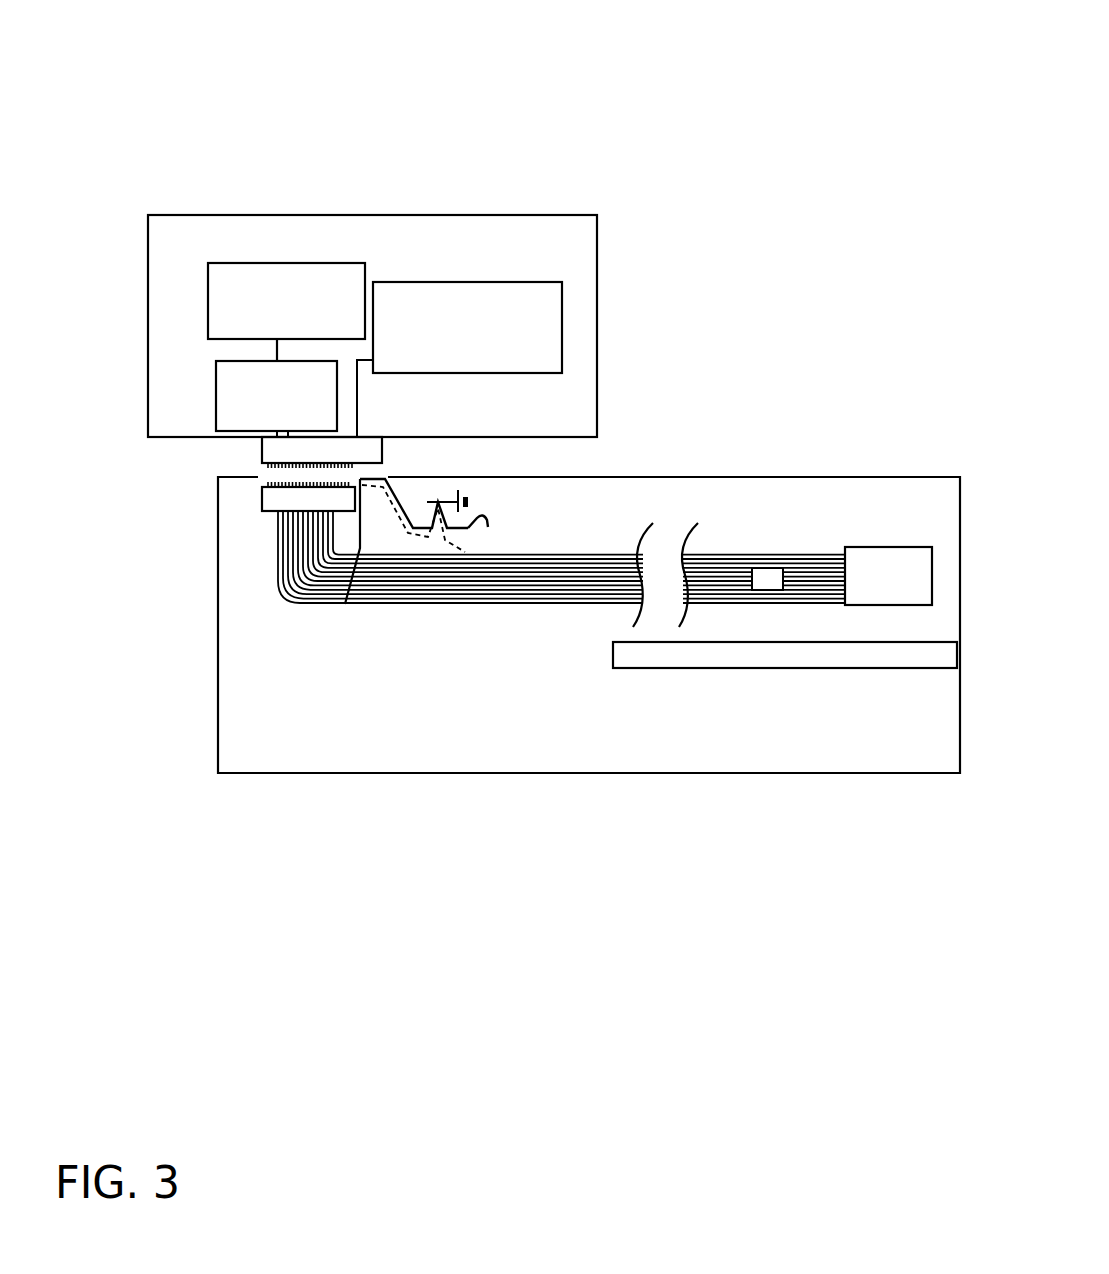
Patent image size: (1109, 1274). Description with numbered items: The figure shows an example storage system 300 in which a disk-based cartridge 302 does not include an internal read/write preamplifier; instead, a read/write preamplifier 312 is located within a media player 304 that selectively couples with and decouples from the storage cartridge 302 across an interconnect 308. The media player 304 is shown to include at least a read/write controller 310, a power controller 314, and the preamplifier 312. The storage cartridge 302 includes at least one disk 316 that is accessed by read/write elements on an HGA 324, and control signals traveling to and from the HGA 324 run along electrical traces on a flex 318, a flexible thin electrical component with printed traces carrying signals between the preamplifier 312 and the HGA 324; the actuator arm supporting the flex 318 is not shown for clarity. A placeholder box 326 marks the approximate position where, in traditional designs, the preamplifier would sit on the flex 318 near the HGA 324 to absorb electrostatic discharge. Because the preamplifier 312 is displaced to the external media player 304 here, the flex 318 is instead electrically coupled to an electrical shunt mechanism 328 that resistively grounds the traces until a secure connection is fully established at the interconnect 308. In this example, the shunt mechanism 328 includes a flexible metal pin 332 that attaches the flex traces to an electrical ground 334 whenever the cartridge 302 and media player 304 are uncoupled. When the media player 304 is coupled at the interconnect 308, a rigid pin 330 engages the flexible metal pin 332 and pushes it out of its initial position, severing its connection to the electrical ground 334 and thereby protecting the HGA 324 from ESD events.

The storage system 300 is at (787, 90).
The disk-based cartridge 302 is at (265, 761).
The media player 304 is at (196, 275).
The interconnect 308 is at (228, 460).
The read/write controller 310 is at (268, 326).
The read/write preamplifier 312 is at (258, 420).
The power controller 314 is at (448, 351).
The disk 316 is at (833, 665).
The flex 318 is at (515, 619).
The HGA 324 is at (869, 600).
The placeholder box 326 is at (773, 568).
The electrical shunt mechanism 328 is at (417, 486).
The rigid pin 330 is at (380, 460).
The flexible metal pin 332 is at (488, 527).
The electrical ground 334 is at (465, 492).